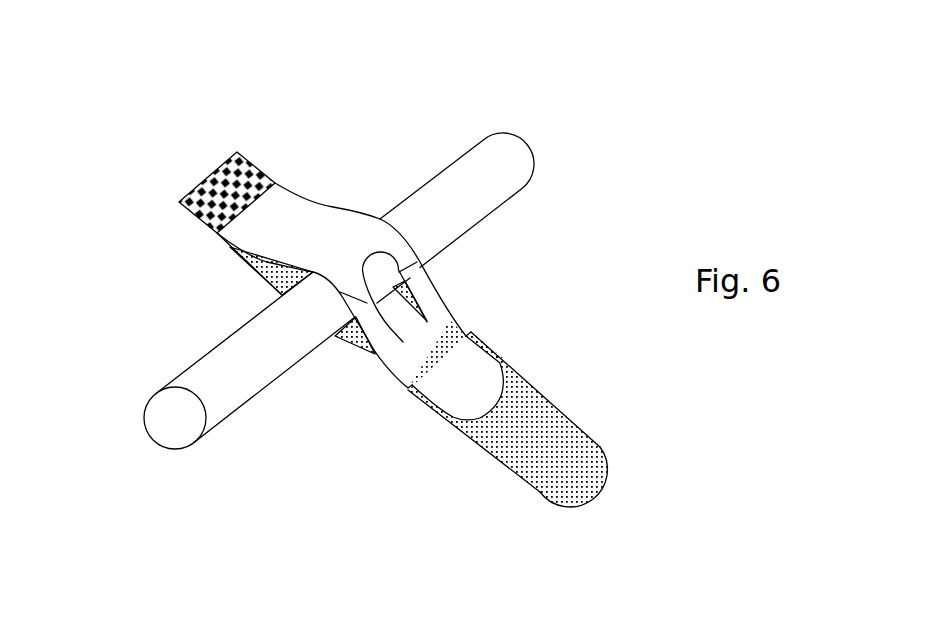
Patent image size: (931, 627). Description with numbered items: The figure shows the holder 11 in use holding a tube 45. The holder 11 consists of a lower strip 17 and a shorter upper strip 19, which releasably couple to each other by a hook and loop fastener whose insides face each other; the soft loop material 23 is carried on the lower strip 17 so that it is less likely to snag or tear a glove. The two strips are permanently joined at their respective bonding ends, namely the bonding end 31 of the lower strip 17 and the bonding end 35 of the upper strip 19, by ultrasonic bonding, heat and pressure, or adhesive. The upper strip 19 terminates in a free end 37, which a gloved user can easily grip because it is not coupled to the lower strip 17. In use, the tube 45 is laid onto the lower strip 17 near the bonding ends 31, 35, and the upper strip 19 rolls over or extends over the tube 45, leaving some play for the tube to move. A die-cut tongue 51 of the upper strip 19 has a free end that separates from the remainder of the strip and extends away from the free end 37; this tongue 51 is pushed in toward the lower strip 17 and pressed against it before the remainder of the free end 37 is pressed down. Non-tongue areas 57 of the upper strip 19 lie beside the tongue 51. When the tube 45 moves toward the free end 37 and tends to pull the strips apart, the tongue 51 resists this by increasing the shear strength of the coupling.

The holder 11 is at (366, 128).
The lower strip 17 is at (487, 448).
The upper strip 19 is at (447, 353).
The loop material 23 is at (543, 475).
The bonding end 31 is at (195, 138).
The bonding end 35 is at (198, 187).
The free end 37 is at (493, 404).
The tube 45 is at (205, 365).
The tongue 51 is at (402, 312).
The non-tongue area 57 is at (412, 268).